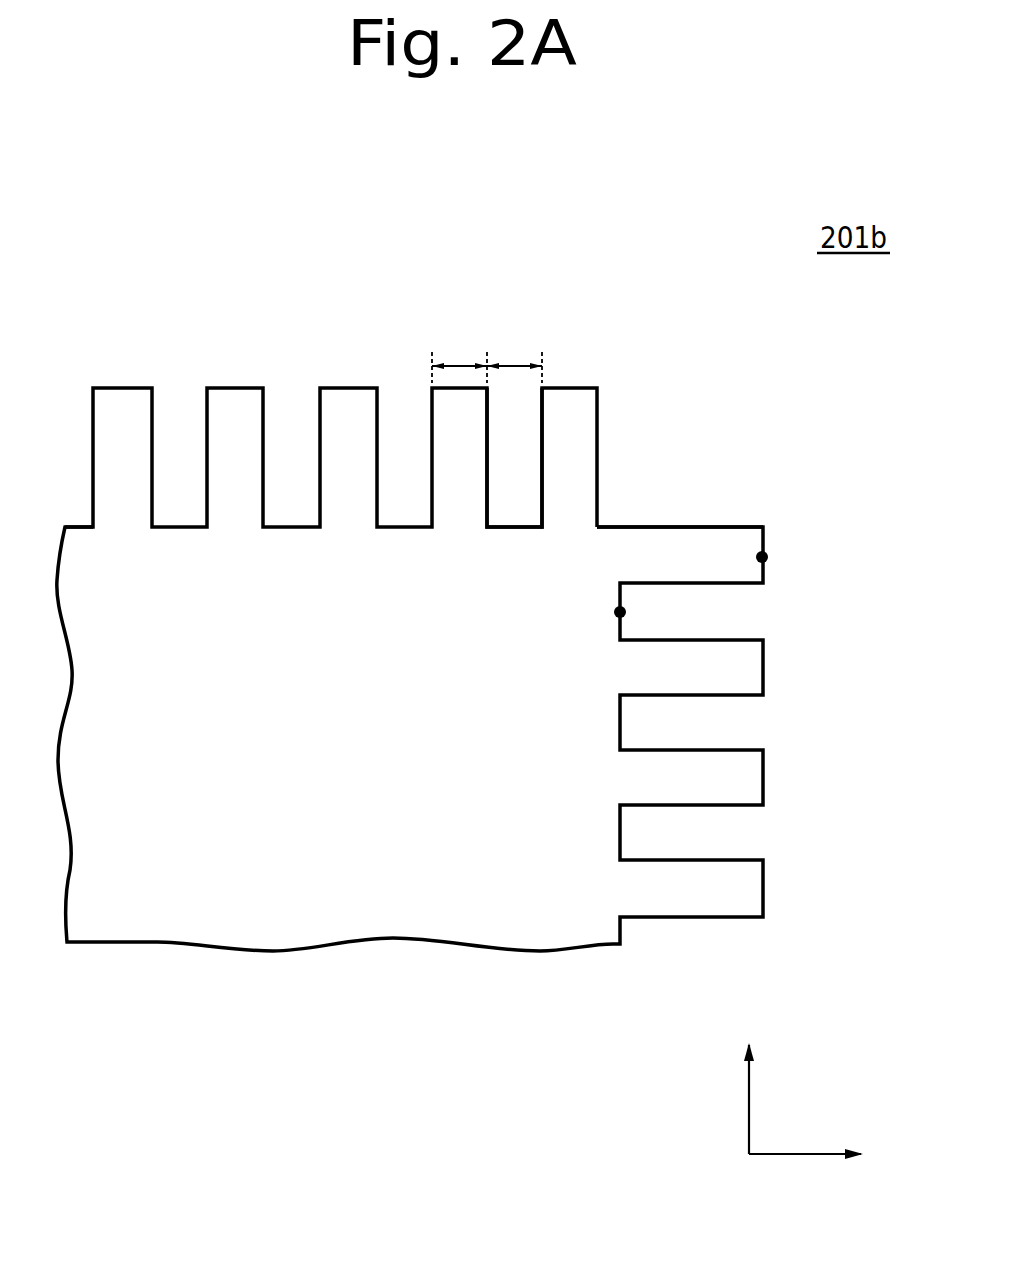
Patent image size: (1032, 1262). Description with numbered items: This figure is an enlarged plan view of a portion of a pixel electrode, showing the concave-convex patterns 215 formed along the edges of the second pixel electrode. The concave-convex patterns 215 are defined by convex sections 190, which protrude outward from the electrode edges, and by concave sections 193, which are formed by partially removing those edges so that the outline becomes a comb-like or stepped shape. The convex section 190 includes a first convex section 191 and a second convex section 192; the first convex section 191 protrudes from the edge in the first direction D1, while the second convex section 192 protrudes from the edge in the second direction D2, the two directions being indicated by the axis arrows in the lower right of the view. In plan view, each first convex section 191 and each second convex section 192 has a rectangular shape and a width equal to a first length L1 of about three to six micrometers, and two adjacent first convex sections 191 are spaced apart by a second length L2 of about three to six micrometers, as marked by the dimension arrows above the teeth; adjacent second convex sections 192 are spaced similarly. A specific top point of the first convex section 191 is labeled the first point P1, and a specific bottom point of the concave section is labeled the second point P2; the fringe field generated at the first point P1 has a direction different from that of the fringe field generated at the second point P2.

The concave-convex patterns 215 is at (471, 620).
The convex section 190 is at (637, 470).
The first convex section 191 is at (672, 552).
The second convex section 192 is at (583, 427).
The concave section 193 is at (522, 414).
The first point P1 is at (762, 557).
The second point P2 is at (620, 612).
The first length L1 is at (459, 354).
The second length L2 is at (514, 354).
The first direction D1 is at (825, 1154).
The second direction D2 is at (749, 1080).